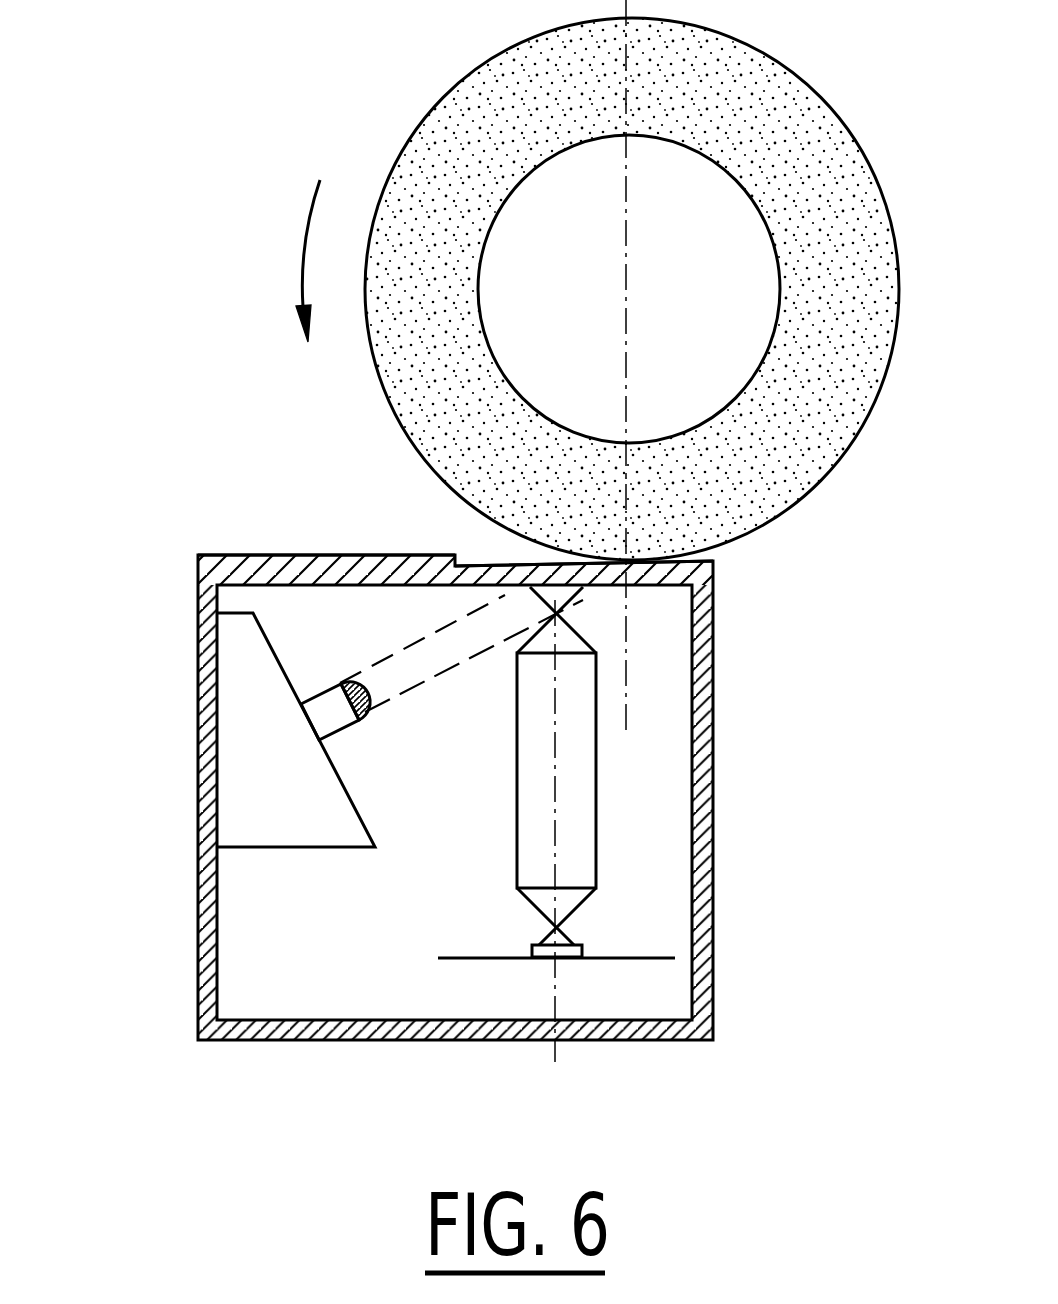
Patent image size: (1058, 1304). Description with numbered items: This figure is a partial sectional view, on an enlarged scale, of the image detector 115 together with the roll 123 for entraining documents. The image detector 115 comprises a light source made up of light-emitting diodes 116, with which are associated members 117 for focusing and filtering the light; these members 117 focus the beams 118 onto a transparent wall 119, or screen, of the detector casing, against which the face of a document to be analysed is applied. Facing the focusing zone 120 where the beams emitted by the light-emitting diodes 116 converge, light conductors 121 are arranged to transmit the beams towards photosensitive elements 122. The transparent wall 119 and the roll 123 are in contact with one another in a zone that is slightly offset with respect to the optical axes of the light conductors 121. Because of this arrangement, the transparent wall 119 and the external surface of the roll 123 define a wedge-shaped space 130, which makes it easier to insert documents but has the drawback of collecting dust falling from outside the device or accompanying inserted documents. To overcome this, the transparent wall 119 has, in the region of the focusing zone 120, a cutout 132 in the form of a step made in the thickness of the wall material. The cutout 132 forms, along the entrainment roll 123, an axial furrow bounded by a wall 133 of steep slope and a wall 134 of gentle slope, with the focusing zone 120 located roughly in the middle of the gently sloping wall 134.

The image detector 115 is at (735, 827).
The light-emitting diodes 116 is at (323, 715).
The members for focusing and filtering the light 117 is at (366, 712).
The beams 118 is at (418, 642).
The transparent wall 119 is at (283, 557).
The focusing zone 120 is at (562, 590).
The light conductors 121 is at (577, 717).
The photosensitive elements 122 is at (548, 950).
The roll for entraining the documents 123 is at (810, 197).
The wedge-shaped space 130 is at (460, 538).
The cutout 132 is at (492, 566).
The wall of steep slope 133 is at (452, 552).
The wall of gentle slope 134 is at (508, 587).